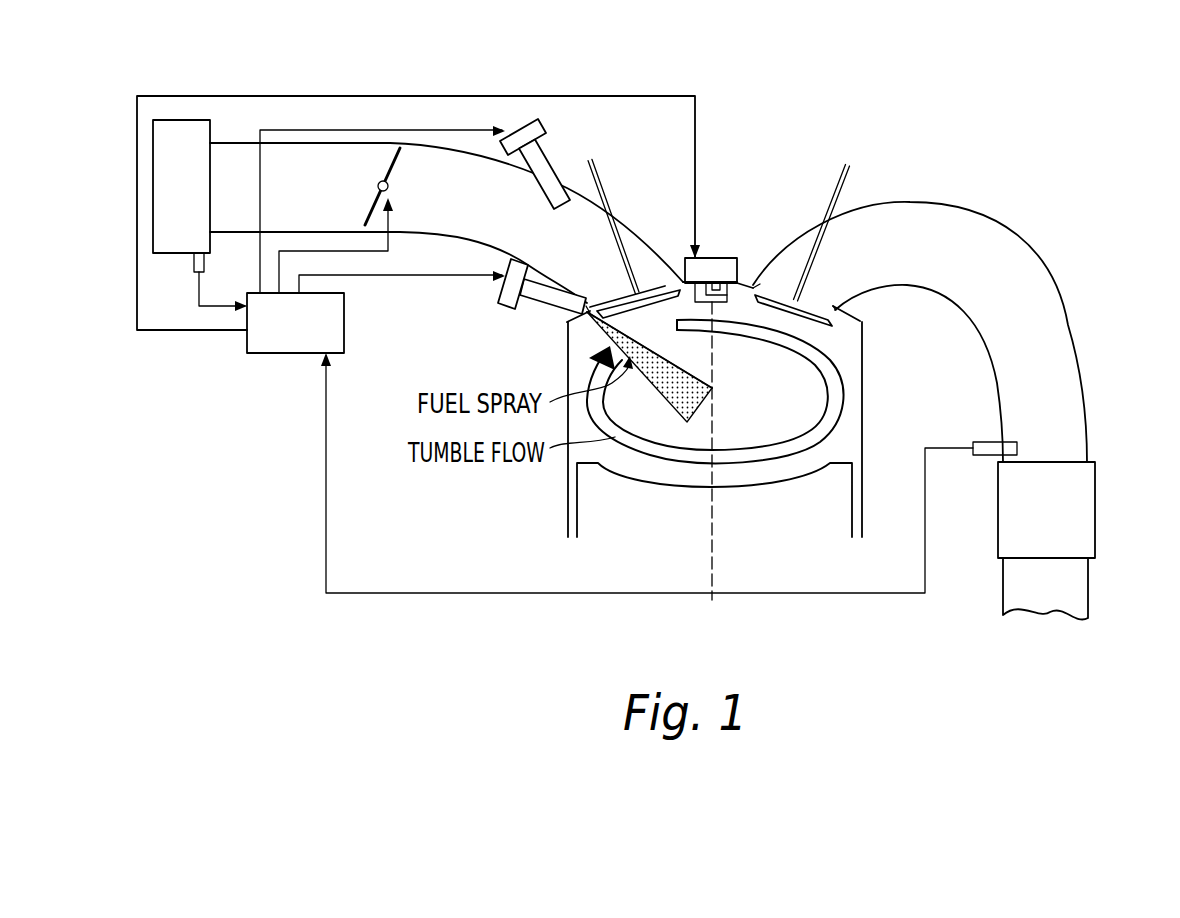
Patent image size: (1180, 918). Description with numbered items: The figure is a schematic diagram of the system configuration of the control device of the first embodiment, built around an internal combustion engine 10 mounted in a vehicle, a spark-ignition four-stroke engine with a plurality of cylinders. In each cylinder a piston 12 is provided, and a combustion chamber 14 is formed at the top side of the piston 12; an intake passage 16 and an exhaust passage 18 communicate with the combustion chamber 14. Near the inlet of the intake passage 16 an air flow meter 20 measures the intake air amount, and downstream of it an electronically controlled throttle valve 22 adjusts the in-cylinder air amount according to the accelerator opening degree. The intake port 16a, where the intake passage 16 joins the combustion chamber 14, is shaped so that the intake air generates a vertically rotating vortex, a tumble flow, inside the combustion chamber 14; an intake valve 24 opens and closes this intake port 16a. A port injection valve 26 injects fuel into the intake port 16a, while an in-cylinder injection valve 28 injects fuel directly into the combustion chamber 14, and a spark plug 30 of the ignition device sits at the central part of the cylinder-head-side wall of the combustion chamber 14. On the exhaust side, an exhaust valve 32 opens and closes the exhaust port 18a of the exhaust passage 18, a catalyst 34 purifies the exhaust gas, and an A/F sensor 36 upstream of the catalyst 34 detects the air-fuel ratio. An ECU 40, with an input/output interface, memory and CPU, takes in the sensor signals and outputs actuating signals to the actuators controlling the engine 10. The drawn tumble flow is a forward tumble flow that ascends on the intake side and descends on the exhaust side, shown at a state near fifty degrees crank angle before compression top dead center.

The internal combustion engine 10 is at (528, 486).
The piston 12 is at (805, 497).
The combustion chamber 14 is at (847, 437).
The intake passage 16 is at (458, 249).
The intake port 16a is at (651, 272).
The exhaust passage 18 is at (940, 195).
The exhaust port 18a is at (792, 270).
The air flow meter 20 is at (193, 265).
The throttle valve 22 is at (367, 224).
The intake valve 24 is at (602, 193).
The port injection valve 26 is at (540, 157).
The in-cylinder injection valve 28 is at (497, 295).
The spark plug 30 is at (717, 256).
The exhaust valve 32 is at (842, 170).
The catalyst 34 is at (1065, 512).
The A/F sensor 36 is at (972, 442).
The ECU 40 is at (252, 354).